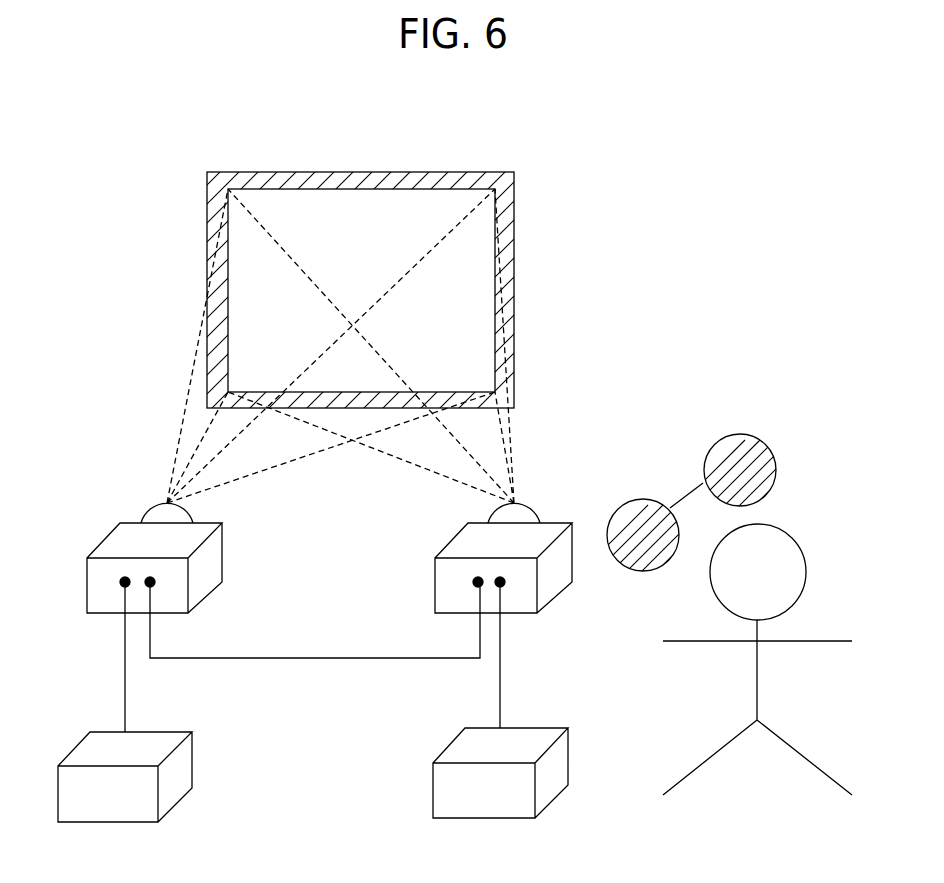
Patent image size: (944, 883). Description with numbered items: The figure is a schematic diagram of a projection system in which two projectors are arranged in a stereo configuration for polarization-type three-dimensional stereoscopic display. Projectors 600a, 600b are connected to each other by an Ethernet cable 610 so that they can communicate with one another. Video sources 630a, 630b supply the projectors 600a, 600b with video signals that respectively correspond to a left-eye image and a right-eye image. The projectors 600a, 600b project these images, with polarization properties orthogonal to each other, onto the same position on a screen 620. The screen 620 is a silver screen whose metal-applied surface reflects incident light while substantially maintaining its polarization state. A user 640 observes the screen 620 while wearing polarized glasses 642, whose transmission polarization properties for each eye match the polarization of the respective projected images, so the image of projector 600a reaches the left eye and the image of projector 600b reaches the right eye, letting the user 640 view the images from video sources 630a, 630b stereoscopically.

The screen 620 is at (370, 172).
The projector 600a is at (210, 565).
The projector 600b is at (443, 583).
The Ethernet cable 610 is at (328, 663).
The video source 630a is at (183, 762).
The video source 630b is at (443, 785).
The user 640 is at (698, 644).
The polarized glasses 642 is at (623, 563).